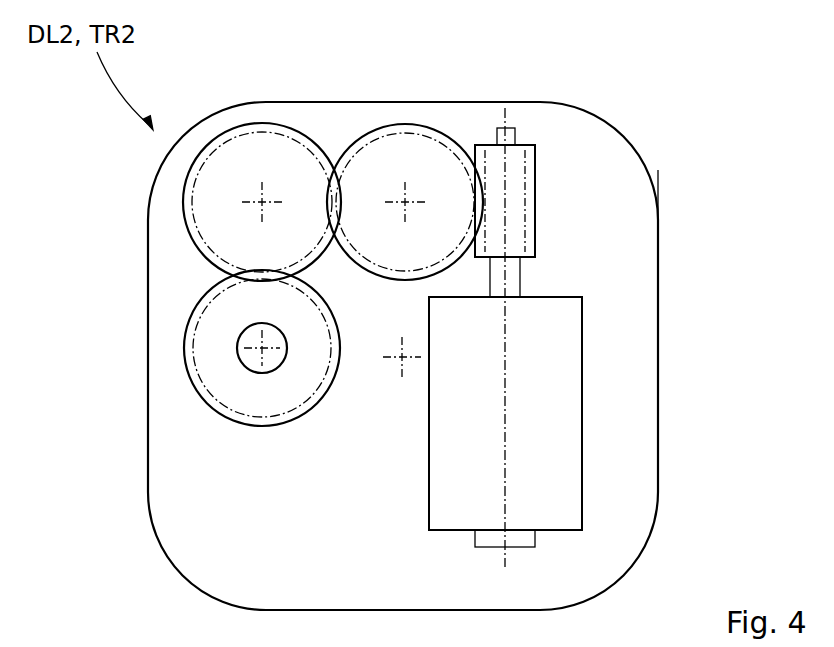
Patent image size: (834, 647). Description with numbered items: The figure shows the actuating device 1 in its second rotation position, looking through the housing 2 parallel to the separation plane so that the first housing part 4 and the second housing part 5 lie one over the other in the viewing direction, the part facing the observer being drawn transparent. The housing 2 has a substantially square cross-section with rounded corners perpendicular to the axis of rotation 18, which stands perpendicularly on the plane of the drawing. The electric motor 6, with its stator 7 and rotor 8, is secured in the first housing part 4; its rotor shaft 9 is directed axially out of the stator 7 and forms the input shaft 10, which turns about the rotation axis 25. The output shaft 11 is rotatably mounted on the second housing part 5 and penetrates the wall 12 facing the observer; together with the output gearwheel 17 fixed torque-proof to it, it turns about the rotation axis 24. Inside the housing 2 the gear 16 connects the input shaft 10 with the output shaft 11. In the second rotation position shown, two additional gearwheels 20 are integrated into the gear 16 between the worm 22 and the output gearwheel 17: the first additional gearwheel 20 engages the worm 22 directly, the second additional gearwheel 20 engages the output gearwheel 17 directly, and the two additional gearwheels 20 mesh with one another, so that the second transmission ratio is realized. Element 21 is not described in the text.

The actuating device 1 is at (715, 155).
The housing 2 is at (670, 282).
The first housing part 4 is at (658, 353).
The second housing part 5 is at (658, 455).
The electric motor 6 is at (595, 410).
The stator 7 is at (428, 482).
The rotor 8 is at (542, 368).
The rotor shaft 9 is at (510, 278).
The input shaft 10 is at (515, 135).
The output shaft 11 is at (265, 352).
The wall 12 is at (205, 515).
The gear 16 is at (165, 262).
The output gearwheel 17 is at (192, 352).
The axis of rotation 18 is at (383, 360).
The additional gearwheel 20 is at (255, 126).
The feed direction 21 is at (472, 122).
The worm 22 is at (535, 200).
The rotation axis 24 is at (250, 363).
The rotation axis 25 is at (507, 120).